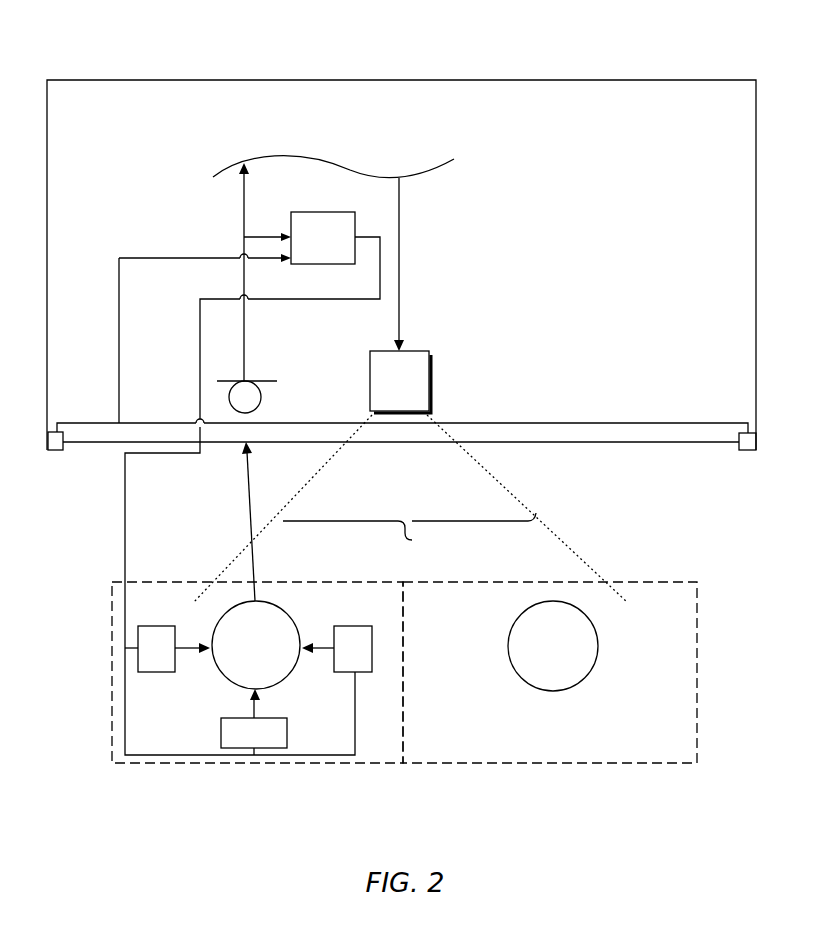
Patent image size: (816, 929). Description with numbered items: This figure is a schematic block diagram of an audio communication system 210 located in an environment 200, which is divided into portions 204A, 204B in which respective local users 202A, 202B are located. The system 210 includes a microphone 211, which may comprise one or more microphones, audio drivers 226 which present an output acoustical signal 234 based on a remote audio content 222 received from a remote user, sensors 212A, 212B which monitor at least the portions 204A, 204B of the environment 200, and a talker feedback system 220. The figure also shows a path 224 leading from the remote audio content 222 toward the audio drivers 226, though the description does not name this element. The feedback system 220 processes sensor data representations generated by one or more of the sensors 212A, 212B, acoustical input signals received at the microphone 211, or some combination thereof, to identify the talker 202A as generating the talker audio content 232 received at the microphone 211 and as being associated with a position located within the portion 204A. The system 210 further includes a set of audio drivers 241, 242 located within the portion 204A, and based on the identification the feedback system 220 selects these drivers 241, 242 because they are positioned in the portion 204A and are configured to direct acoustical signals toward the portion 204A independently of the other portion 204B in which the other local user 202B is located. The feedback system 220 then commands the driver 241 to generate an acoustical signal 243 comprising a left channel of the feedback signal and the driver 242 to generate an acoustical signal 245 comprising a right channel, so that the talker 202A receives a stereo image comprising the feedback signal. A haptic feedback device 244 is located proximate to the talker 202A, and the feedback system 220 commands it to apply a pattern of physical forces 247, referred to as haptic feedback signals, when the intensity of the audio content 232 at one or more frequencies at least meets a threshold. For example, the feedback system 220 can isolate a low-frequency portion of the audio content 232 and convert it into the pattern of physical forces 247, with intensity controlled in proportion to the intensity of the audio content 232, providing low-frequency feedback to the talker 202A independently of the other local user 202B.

The environment 200 is at (78, 40).
The audio communication system 210 is at (711, 107).
The microphone 211 is at (256, 372).
The sensor 212A is at (62, 458).
The sensor 212B is at (738, 460).
The talker feedback system 220 is at (307, 248).
The remote audio content 222 is at (412, 186).
The reflected light 224 is at (432, 251).
The audio drivers 226 is at (384, 391).
The talker audio content 232 is at (236, 468).
The output acoustical signal 234 is at (412, 540).
The talker 202A is at (234, 655).
The local user 202B is at (531, 656).
The portion of the environment 204A is at (352, 605).
The portion of the environment 204B is at (418, 603).
The audio driver 241 is at (141, 659).
The audio driver 242 is at (337, 659).
The acoustical signal 243 is at (178, 634).
The haptic feedback device 244 is at (238, 743).
The acoustical signal 245 is at (330, 633).
The physical forces 247 is at (243, 704).